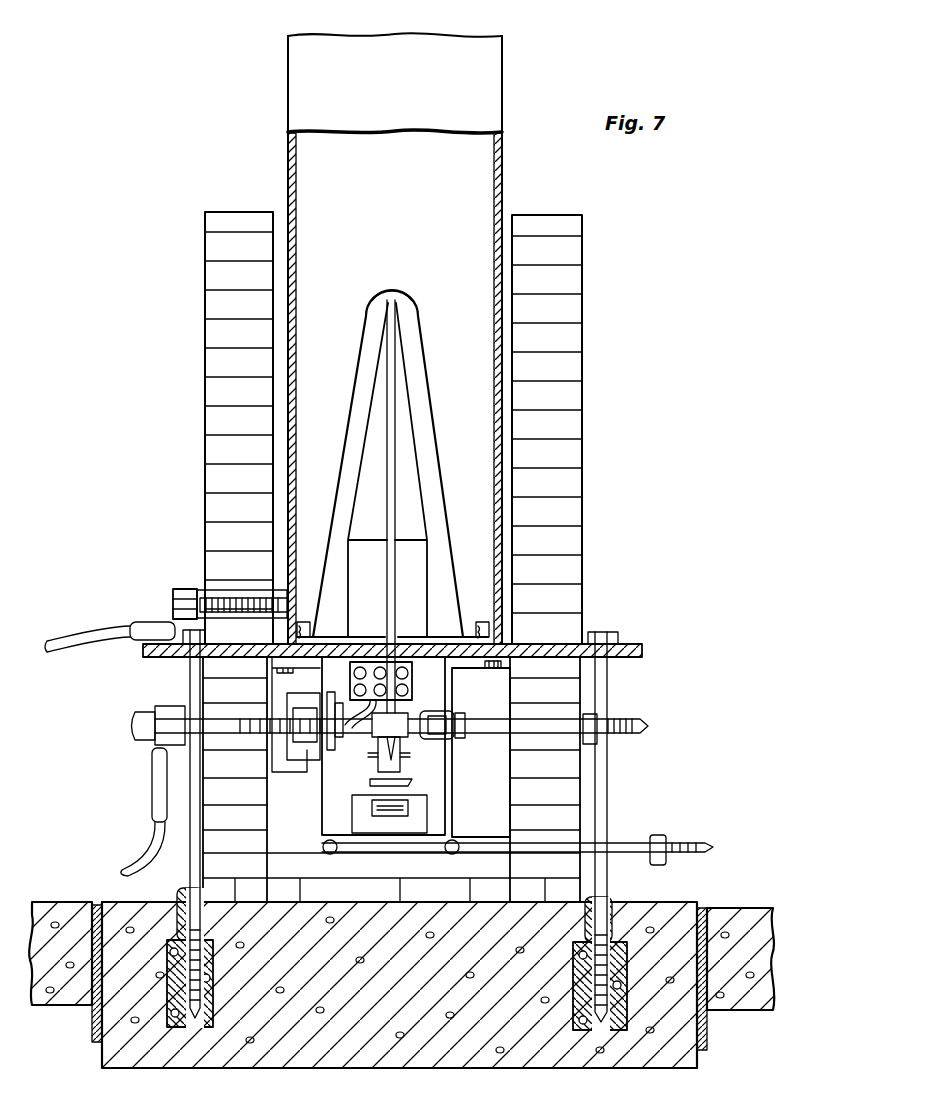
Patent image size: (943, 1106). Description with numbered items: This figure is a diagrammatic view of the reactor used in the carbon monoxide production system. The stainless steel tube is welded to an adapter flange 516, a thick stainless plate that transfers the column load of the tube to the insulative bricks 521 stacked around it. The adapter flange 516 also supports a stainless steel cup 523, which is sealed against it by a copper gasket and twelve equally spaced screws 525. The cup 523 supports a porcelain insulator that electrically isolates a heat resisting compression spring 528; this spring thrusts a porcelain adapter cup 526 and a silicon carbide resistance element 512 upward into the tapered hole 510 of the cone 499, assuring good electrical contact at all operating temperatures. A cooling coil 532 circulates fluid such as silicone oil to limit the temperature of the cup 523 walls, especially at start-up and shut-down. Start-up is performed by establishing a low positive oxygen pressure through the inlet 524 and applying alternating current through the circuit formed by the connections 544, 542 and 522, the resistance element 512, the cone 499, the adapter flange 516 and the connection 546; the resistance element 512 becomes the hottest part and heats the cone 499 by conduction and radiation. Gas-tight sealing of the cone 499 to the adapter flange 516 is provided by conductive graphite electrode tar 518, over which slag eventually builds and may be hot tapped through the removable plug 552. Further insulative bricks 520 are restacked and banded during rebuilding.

The cone 499 is at (405, 326).
The tapered hole 510 is at (400, 299).
The silicon carbide resistance element 512 is at (395, 453).
The conductive graphite electrode tar 518 is at (476, 628).
The adapter flange 516 is at (645, 649).
The removable plug 552 is at (178, 598).
The electrical connection 546 is at (130, 624).
The insulative bricks 521 is at (570, 779).
The electrical connection 522 is at (412, 692).
The screws 525 is at (272, 677).
The electrical connection 542 is at (135, 723).
The porcelain adapter cup 526 is at (410, 723).
The oxygen inlet 524 is at (633, 716).
The stainless steel cup 523 is at (402, 772).
The heat resisting compression spring 528 is at (412, 783).
The insulative bricks 520 is at (423, 817).
The electrical connection 544 is at (126, 862).
The cooling coil 532 is at (328, 845).